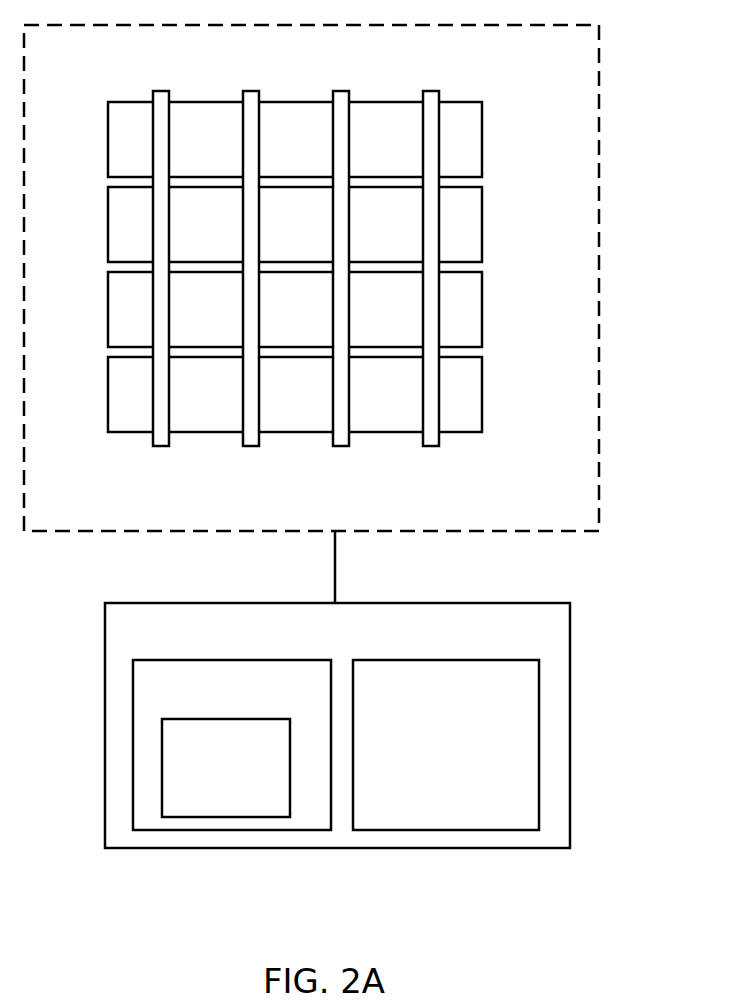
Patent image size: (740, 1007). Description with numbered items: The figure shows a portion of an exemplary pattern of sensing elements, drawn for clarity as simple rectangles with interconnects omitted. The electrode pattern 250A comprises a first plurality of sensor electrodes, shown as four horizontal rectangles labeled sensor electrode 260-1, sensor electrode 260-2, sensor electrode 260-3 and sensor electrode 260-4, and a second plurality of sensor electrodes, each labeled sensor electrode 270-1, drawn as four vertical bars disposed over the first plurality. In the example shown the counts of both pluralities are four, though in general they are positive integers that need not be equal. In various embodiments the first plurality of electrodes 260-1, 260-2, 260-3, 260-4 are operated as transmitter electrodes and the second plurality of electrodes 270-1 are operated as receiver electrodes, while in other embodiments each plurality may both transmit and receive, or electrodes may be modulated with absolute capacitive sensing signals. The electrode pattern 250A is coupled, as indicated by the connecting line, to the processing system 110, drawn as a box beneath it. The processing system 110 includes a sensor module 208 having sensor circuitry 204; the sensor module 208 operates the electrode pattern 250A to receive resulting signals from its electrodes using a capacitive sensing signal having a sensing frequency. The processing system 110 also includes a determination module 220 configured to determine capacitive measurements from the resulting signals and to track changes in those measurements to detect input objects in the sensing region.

The electrode pattern 250A is at (598, 74).
The sensor electrode 260-1 is at (472, 144).
The sensor electrode 260-2 is at (472, 228).
The sensor electrode 260-3 is at (472, 314).
The sensor electrode 260-4 is at (472, 400).
The sensor electrode 270-1 is at (159, 438).
The processing system 110 is at (442, 637).
The sensor module 208 is at (318, 693).
The sensor circuitry 204 is at (208, 809).
The determination module 220 is at (497, 769).